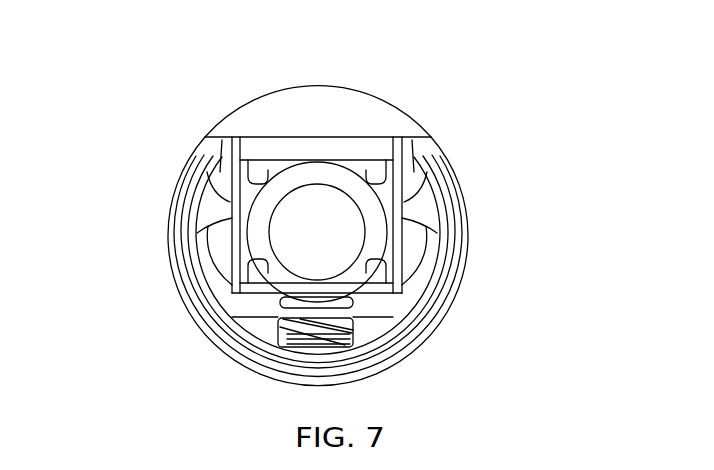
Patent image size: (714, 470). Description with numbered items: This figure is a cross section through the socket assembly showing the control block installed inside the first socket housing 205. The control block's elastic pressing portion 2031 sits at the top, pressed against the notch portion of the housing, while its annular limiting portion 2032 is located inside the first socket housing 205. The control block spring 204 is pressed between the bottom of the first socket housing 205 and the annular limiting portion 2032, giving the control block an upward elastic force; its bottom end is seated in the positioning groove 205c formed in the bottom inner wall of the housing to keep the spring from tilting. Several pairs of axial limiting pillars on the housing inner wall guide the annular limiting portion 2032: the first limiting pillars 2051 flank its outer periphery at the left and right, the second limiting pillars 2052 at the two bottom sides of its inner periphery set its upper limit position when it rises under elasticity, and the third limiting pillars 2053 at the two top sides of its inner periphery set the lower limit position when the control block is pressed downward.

The elastic pressing portion 2031 is at (331, 78).
The annular limiting portion 2032 is at (243, 171).
The first limiting pillar 2051 is at (310, 261).
The second limiting pillar 2052 is at (322, 318).
The third limiting pillar 2053 is at (332, 124).
The first socket housing 205 is at (375, 261).
The positioning groove 205c is at (254, 347).
The control block spring 204 is at (368, 353).